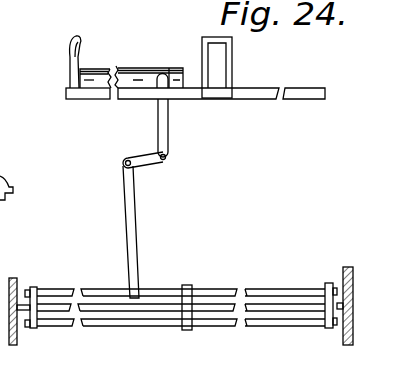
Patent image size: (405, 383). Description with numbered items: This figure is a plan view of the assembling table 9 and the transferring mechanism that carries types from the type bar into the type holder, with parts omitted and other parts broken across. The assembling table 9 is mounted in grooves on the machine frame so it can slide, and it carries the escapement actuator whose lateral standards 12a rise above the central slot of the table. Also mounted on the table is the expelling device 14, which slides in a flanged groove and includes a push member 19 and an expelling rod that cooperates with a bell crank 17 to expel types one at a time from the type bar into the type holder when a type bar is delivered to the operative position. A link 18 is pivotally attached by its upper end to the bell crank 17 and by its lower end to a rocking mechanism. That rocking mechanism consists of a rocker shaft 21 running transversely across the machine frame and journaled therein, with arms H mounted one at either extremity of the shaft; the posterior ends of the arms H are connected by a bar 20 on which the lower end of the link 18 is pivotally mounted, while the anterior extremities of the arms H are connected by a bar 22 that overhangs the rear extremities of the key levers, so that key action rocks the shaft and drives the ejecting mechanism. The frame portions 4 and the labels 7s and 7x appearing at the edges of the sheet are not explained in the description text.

The frame wall 4 is at (15, 280).
The arms H is at (37, 290).
The assembling table 9 is at (293, 88).
The lateral standards 12a is at (203, 37).
The expelling device 14 is at (100, 77).
The bell crank 17 is at (165, 133).
The link 18 is at (134, 215).
The push member 19 is at (70, 56).
The bar 20 is at (252, 288).
The rocker shaft 21 is at (262, 297).
The bar 22 is at (87, 327).
The label 7s is at (56, 12).
The label 7x is at (93, 12).